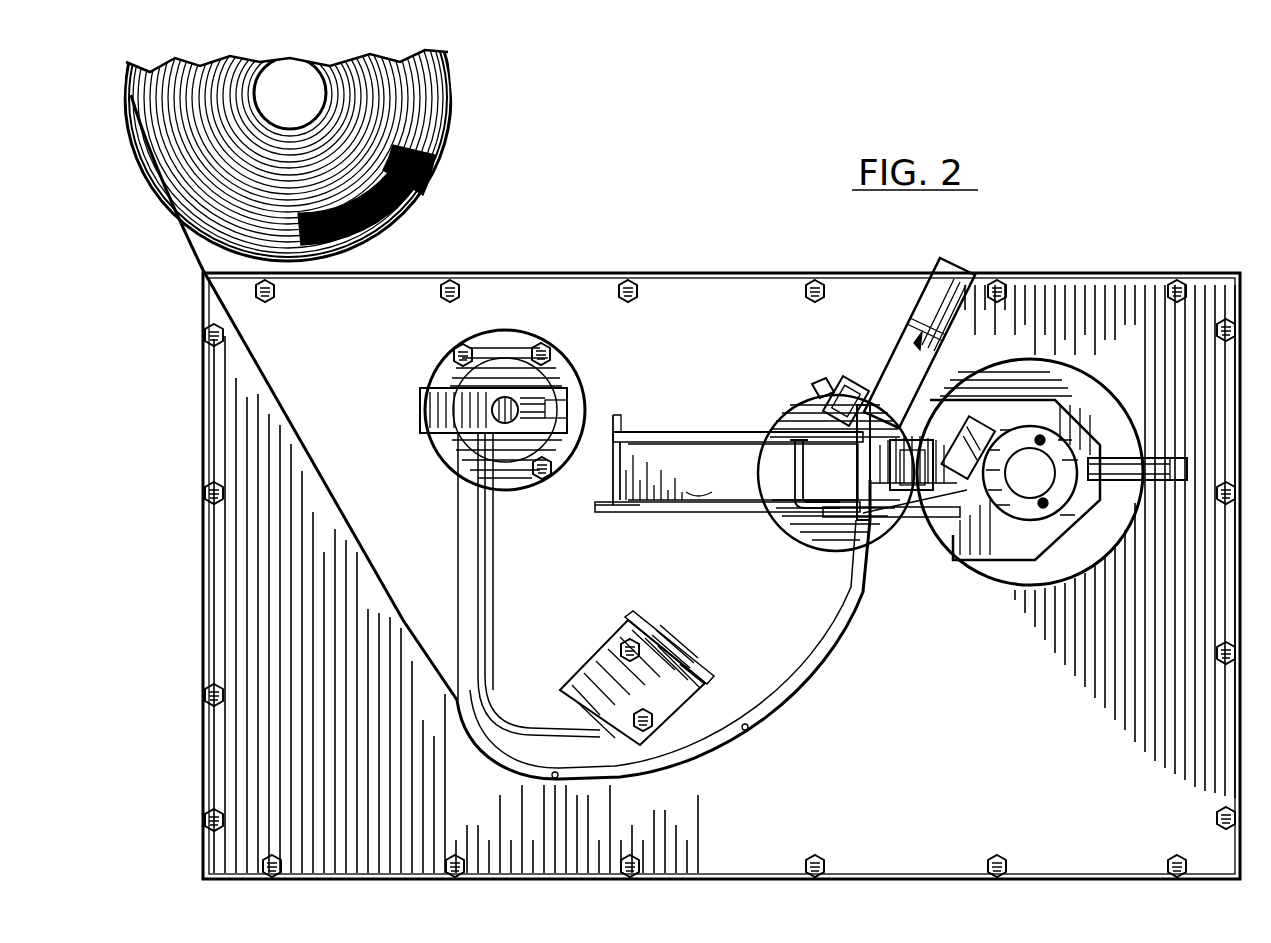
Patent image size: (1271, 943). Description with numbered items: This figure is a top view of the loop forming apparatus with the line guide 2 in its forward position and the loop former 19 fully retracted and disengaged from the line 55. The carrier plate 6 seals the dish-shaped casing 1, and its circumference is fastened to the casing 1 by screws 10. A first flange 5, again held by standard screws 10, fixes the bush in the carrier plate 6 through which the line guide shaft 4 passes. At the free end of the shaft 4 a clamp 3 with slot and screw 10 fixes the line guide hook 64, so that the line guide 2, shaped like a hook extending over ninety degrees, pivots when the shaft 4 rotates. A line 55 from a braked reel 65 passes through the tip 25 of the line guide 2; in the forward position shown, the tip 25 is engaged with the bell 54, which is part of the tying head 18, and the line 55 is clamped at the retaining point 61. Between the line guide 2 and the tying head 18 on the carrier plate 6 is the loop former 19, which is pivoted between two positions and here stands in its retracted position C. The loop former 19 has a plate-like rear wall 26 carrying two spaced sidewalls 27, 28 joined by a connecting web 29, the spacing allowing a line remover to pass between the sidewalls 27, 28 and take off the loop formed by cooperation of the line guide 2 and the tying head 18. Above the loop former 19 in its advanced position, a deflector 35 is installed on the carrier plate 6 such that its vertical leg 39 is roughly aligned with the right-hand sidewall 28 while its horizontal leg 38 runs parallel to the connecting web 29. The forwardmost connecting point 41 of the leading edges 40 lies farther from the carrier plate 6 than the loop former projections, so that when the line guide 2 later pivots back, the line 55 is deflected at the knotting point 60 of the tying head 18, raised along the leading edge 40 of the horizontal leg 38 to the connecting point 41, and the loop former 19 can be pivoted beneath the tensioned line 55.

The dish-shaped casing 1 is at (372, 268).
The line guide 2 is at (790, 655).
The clamp 3 is at (433, 405).
The line guide shaft 4 is at (512, 396).
The first flange 5 is at (547, 382).
The carrier plate 6 is at (665, 305).
The screws 10 is at (453, 280).
The tying head 18 is at (862, 473).
The loop former 19 is at (680, 512).
The tip 25 is at (846, 380).
The loop former rear wall 26 is at (730, 490).
The left-hand sidewall 27 is at (760, 512).
The right-hand sidewall 28 is at (740, 440).
The connecting web 29 is at (620, 456).
The deflector 35 is at (585, 722).
The horizontal leg 38 is at (680, 645).
The vertical leg 39 is at (580, 662).
The leading edges 40 is at (700, 660).
The connecting point 41 is at (705, 680).
The bell 54 is at (836, 382).
The line 55 is at (335, 500).
The knotting point 60 is at (800, 466).
The retaining point 61 is at (818, 386).
The line guide hook 64 is at (475, 548).
The reel 65 is at (445, 75).